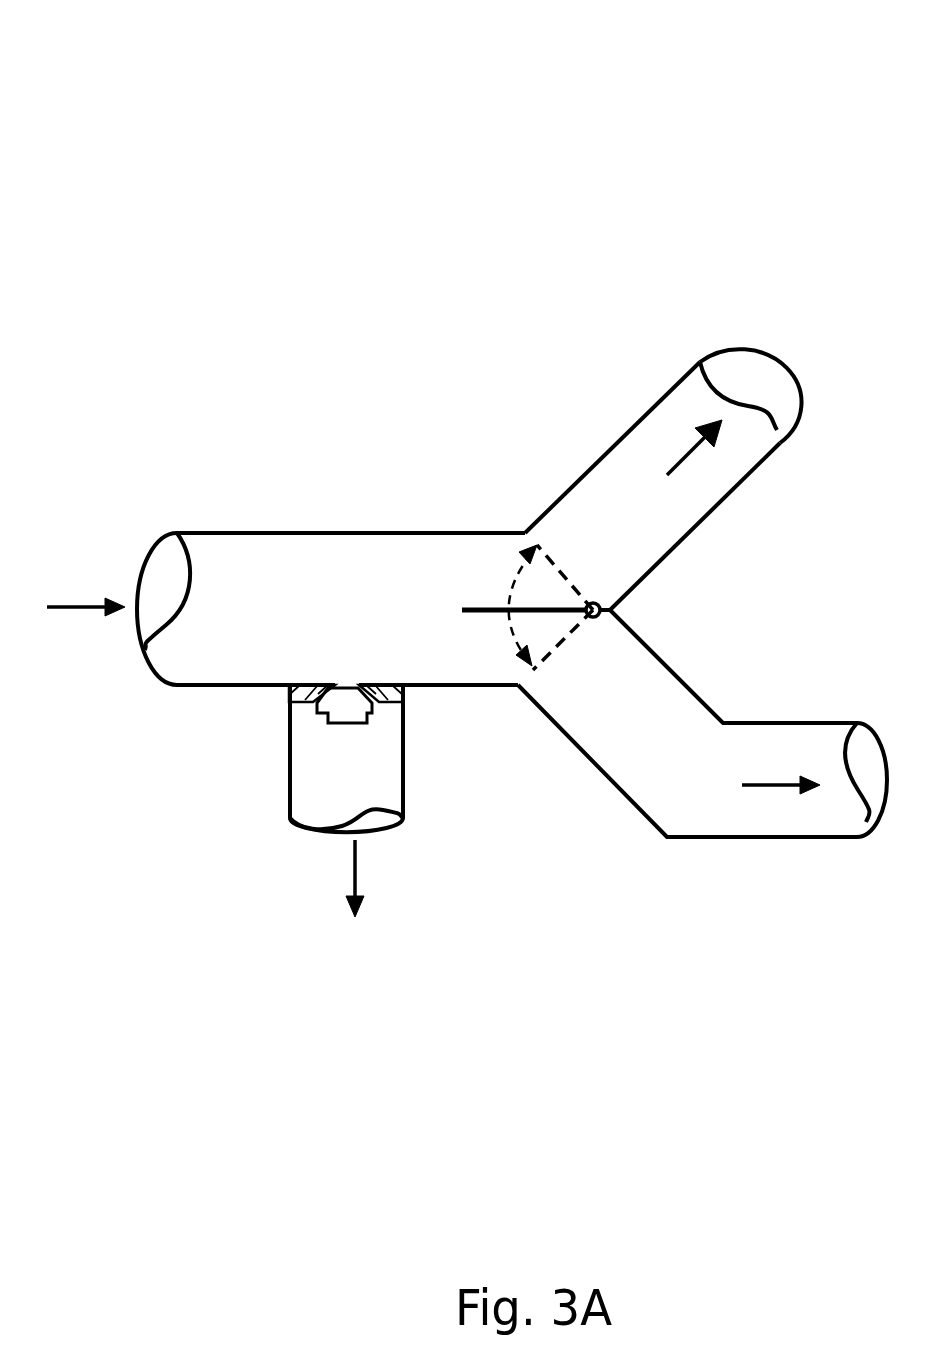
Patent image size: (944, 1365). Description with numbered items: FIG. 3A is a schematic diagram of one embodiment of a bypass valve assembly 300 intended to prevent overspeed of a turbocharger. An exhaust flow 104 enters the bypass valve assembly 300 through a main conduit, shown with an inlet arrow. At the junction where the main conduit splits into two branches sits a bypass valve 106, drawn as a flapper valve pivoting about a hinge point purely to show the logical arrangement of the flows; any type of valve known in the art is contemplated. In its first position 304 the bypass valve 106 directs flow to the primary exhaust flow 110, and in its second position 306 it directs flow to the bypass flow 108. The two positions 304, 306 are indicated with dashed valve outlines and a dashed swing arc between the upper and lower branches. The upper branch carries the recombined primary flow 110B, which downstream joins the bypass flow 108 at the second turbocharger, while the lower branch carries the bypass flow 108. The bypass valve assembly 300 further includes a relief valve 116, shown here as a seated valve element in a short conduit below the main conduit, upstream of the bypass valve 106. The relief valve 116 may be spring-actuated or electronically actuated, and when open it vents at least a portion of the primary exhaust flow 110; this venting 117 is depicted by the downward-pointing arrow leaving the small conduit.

The bypass valve assembly 300 is at (158, 83).
The exhaust flow 104 is at (79, 606).
The primary exhaust flow 110 is at (238, 533).
The recombined primary flow 110B is at (627, 430).
The bypass flow 108 is at (787, 722).
The bypass valve 106 is at (485, 607).
The second position 306 is at (555, 571).
The first position 304 is at (533, 672).
The relief valve 116 is at (345, 686).
The venting 117 is at (290, 750).